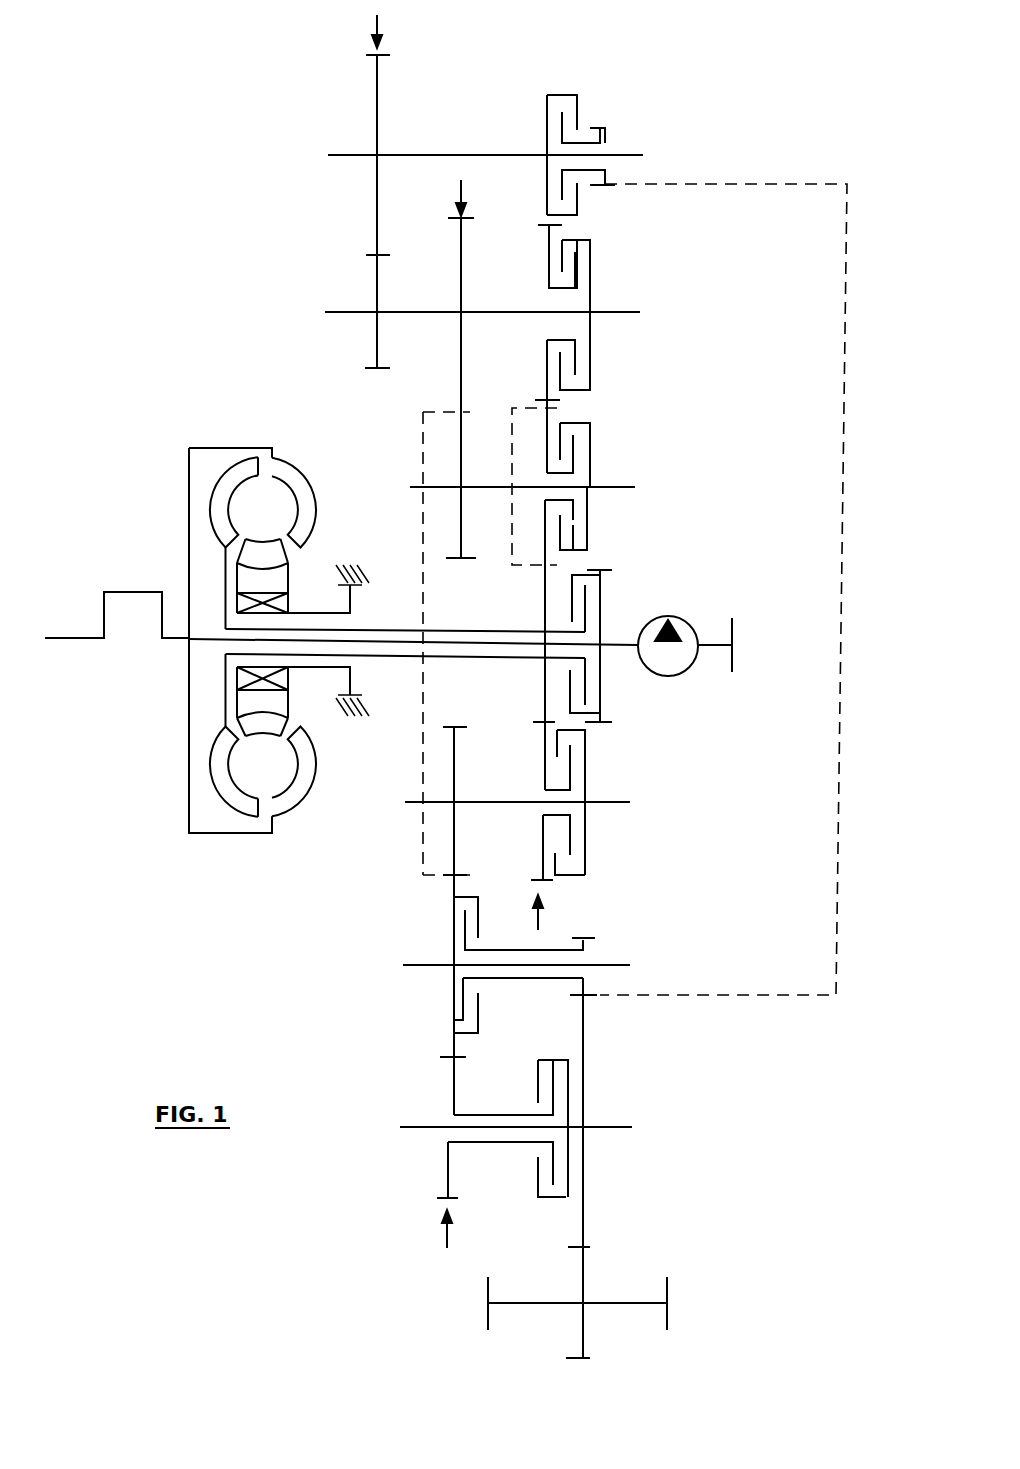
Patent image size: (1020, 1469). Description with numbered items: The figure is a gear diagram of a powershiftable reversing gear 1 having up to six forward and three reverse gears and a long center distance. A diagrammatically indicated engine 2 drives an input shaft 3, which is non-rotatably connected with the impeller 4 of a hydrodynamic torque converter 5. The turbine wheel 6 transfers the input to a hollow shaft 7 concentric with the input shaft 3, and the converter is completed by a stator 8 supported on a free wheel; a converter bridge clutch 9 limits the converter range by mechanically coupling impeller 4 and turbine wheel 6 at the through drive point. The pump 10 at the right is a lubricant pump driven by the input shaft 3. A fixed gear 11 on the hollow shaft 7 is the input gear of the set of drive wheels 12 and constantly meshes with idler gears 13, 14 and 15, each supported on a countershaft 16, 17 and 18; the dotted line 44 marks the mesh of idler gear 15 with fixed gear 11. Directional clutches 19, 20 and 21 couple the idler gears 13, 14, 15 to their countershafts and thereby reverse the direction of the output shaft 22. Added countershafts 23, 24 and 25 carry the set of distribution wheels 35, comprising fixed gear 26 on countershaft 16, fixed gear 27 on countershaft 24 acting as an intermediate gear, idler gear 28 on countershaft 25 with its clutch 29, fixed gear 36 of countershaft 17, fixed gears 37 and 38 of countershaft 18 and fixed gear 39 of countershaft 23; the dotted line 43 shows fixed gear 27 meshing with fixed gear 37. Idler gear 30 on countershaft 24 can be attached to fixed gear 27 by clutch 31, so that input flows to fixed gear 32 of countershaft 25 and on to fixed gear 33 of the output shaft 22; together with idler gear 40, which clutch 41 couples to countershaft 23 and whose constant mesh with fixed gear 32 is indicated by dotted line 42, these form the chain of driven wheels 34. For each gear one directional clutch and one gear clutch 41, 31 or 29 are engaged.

The reversing gear 1 is at (150, 399).
The engine 2 is at (110, 592).
The input shaft 3 is at (365, 645).
The impeller 4 is at (295, 805).
The hydrodynamic torque converter 5 is at (235, 441).
The turbine wheel 6 is at (218, 790).
The hollow shaft 7 is at (465, 658).
The stator 8 is at (245, 720).
The converter bridge clutch 9 is at (603, 582).
The pump 10 is at (683, 622).
The fixed gear 11 is at (545, 712).
The set of drive wheels 12 is at (545, 917).
The idler gear 13 is at (540, 852).
The idler gear 14 is at (560, 536).
The idler gear 15 is at (545, 378).
The countershaft 16 is at (478, 803).
The countershaft 17 is at (620, 487).
The countershaft 18 is at (620, 312).
The clutch 19 is at (588, 775).
The clutch 20 is at (592, 425).
The clutch 21 is at (592, 250).
The output shaft 22 is at (553, 1300).
The countershaft 23 is at (430, 154).
The countershaft 24 is at (615, 965).
The countershaft 25 is at (617, 1130).
The fixed gear 26 is at (423, 840).
The fixed gear 27 is at (452, 1003).
The idler gear 28 is at (452, 1100).
The clutch 29 is at (542, 1200).
The idler gear 30 is at (590, 985).
The clutch 31 is at (468, 1037).
The fixed gear 32 is at (586, 1060).
The fixed gear 33 is at (586, 1343).
The chain of driven wheels 34 is at (612, 1230).
The set of distribution wheels 35 is at (374, 24).
The fixed gear 36 is at (458, 448).
The fixed gear 37 is at (458, 360).
The fixed gear 38 is at (373, 292).
The fixed gear 39 is at (375, 118).
The idler gear 40 is at (608, 172).
The clutch 41 is at (580, 97).
The dotted line 42 is at (845, 482).
The dotted line 43 is at (424, 606).
The dotted line 44 is at (510, 545).